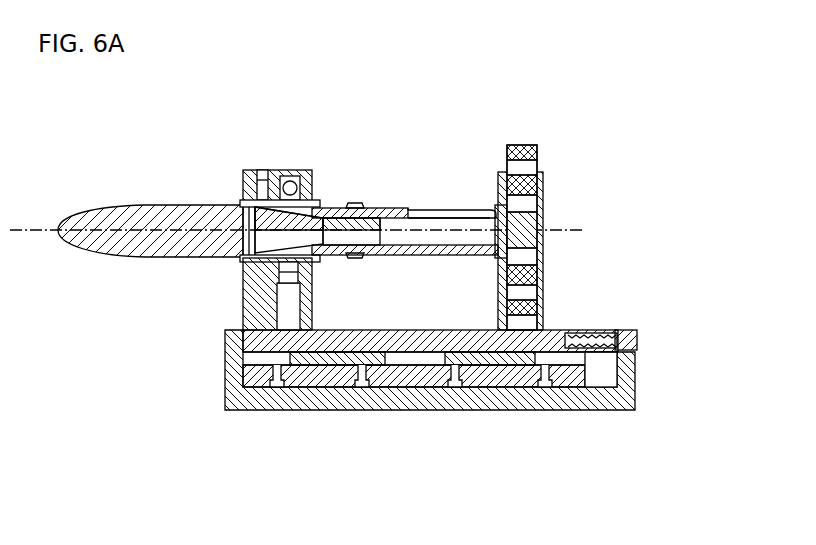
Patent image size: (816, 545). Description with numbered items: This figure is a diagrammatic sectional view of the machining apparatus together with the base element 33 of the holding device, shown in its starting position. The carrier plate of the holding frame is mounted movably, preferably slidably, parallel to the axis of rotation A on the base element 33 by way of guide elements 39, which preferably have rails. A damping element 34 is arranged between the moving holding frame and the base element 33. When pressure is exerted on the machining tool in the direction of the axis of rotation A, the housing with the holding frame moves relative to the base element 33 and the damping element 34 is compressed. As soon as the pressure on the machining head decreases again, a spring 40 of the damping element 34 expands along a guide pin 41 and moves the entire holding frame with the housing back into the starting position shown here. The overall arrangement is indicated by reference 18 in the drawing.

The clamping device 18 is at (384, 276).
The base element 33 is at (403, 395).
The damping element 34 is at (491, 369).
The guide elements 39 is at (497, 352).
The spring 40 is at (592, 338).
The guide pin 41 is at (632, 353).
The axis of rotation A is at (437, 228).